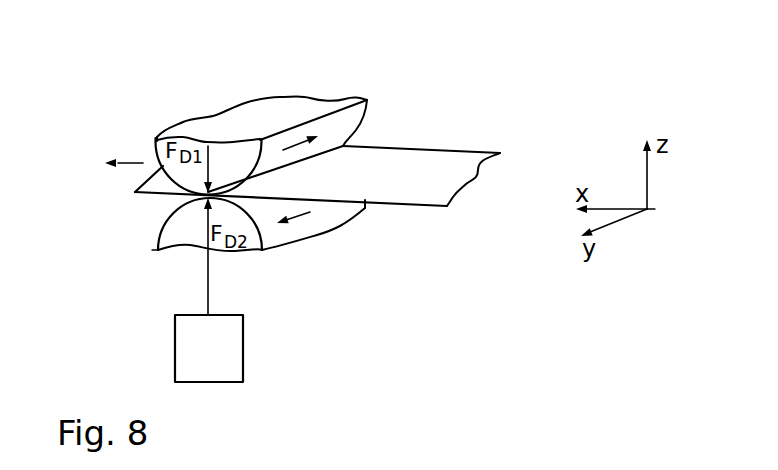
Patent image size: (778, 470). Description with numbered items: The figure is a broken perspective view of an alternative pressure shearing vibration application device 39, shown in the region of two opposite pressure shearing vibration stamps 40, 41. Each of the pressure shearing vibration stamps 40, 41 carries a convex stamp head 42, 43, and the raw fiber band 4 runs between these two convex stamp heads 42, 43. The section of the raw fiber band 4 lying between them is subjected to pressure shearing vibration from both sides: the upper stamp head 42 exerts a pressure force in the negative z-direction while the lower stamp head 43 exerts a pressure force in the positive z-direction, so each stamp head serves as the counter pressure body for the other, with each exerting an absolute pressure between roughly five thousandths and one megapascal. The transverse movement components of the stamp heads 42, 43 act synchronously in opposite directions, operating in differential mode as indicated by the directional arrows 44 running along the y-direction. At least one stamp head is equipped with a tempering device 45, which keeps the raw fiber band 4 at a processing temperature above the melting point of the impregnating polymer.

The raw fiber band 4 is at (427, 160).
The pressure shearing vibration application device 39 is at (147, 128).
The pressure shearing vibration stamp 40 is at (277, 92).
The pressure shearing vibration stamp 41 is at (165, 257).
The convex stamp head 42 is at (156, 140).
The convex stamp head 43 is at (175, 220).
The directional arrows 44 is at (302, 150).
The tempering device 45 is at (181, 348).